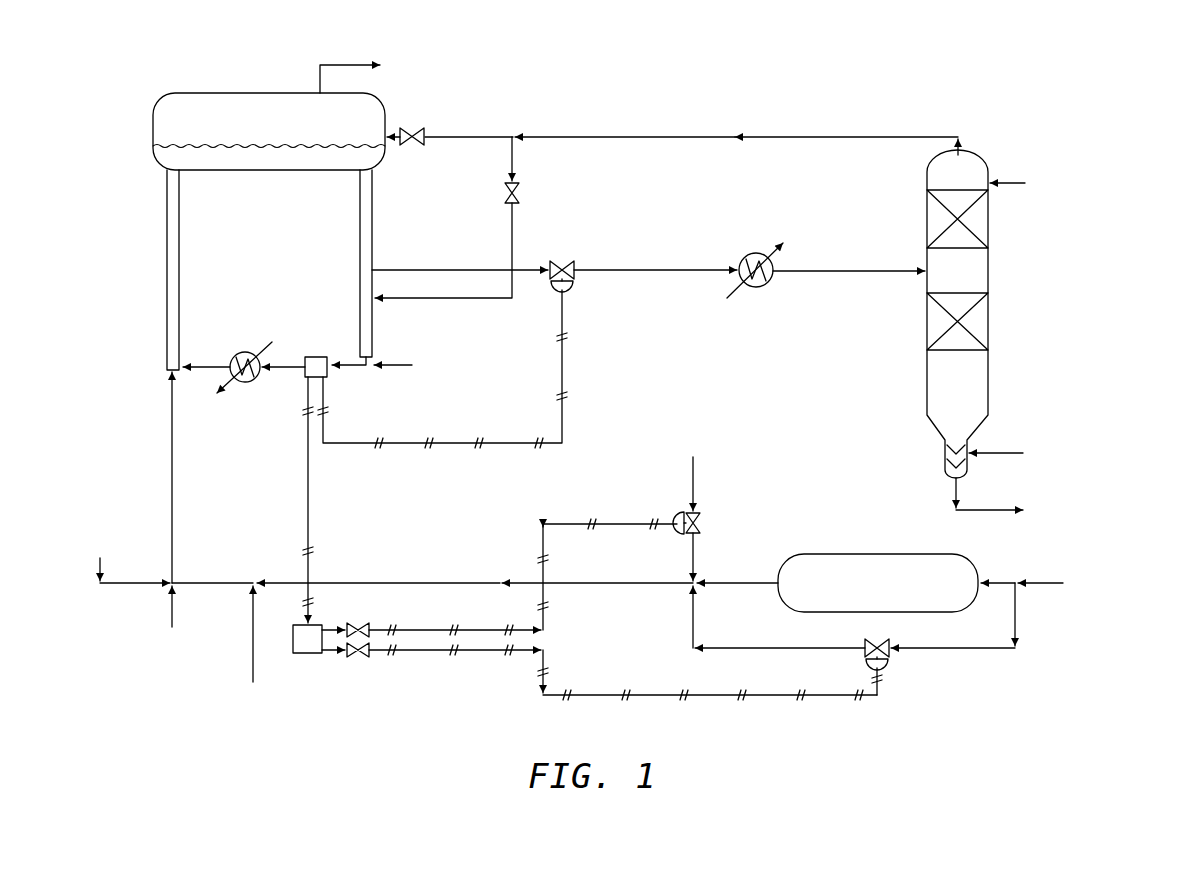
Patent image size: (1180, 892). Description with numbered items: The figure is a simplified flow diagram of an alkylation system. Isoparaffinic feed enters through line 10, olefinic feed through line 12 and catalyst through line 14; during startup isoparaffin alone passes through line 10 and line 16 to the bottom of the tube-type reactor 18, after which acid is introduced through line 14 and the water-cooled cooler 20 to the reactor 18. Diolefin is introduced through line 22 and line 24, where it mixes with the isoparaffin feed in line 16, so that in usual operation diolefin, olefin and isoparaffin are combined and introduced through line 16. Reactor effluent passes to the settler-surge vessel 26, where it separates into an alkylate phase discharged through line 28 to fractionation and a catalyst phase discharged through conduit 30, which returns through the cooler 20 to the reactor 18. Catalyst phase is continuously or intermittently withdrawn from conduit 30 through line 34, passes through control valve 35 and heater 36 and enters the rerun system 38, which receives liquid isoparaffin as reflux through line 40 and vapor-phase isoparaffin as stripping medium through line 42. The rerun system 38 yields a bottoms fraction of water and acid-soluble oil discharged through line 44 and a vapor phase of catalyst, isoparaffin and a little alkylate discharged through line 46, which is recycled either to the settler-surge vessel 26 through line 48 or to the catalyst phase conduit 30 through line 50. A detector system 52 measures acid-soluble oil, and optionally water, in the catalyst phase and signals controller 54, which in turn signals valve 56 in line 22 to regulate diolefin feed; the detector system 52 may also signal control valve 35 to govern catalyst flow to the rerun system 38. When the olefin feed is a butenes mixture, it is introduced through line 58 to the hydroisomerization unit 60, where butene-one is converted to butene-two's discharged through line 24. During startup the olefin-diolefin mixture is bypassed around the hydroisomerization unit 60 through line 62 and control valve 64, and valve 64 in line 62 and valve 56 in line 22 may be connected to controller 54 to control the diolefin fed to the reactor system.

The line 10 is at (164, 583).
The line 12 is at (253, 617).
The line 14 is at (380, 365).
The line 16 is at (168, 401).
The tube-type reactor 18 is at (179, 186).
The water-cooled cooler 20 is at (242, 352).
The line 22 is at (693, 475).
The line 24 is at (292, 583).
The settler-surge vessel 26 is at (348, 141).
The line 28 is at (320, 76).
The conduit 30 is at (360, 221).
The line 34 is at (469, 270).
The control valve 35 is at (562, 264).
The heater 36 is at (752, 257).
The rerun system 38 is at (957, 314).
The line 40 is at (1000, 183).
The line 42 is at (980, 453).
The line 44 is at (972, 510).
The line 46 is at (956, 137).
The line 48 is at (482, 137).
The line 50 is at (503, 246).
The detector system 52 is at (315, 357).
The controller 54 is at (303, 653).
The valve 56 is at (700, 528).
The line 58 is at (1075, 600).
The hydroisomerization unit 60 is at (865, 599).
The line 62 is at (693, 610).
The control valve 64 is at (724, 657).